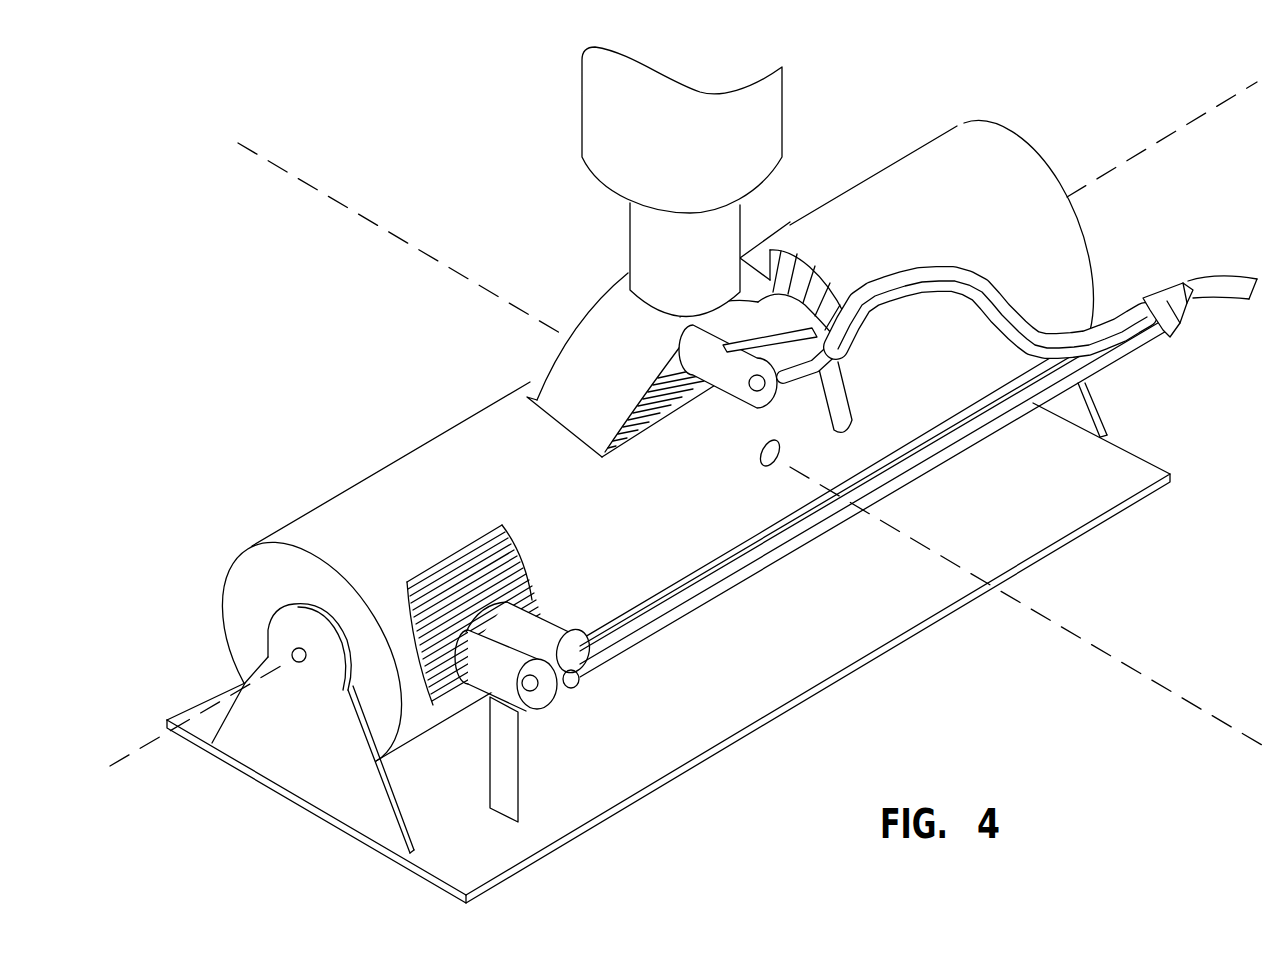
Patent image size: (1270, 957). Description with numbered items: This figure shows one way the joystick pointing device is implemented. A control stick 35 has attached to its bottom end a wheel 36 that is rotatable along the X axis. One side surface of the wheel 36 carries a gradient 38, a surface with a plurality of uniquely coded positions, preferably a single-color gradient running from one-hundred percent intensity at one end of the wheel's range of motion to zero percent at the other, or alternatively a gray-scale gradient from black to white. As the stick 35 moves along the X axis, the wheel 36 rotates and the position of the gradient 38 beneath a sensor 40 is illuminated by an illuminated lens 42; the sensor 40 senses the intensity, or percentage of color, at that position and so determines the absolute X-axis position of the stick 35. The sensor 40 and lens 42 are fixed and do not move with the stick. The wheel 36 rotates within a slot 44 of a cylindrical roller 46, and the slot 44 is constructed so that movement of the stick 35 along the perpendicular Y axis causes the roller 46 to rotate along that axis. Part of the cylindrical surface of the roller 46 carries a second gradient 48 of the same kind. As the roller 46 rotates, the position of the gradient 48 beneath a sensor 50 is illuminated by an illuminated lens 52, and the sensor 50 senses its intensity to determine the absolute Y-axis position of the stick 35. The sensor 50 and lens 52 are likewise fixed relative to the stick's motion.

The control stick 35 is at (592, 115).
The wheel 36 is at (565, 352).
The gradient 38 is at (640, 440).
The sensor 40 is at (796, 270).
The illuminated lens 42 is at (727, 387).
The slot 44 is at (530, 396).
The roller 46 is at (397, 484).
The gradient 48 is at (468, 580).
The sensor 50 is at (547, 623).
The illuminated lens 52 is at (490, 672).